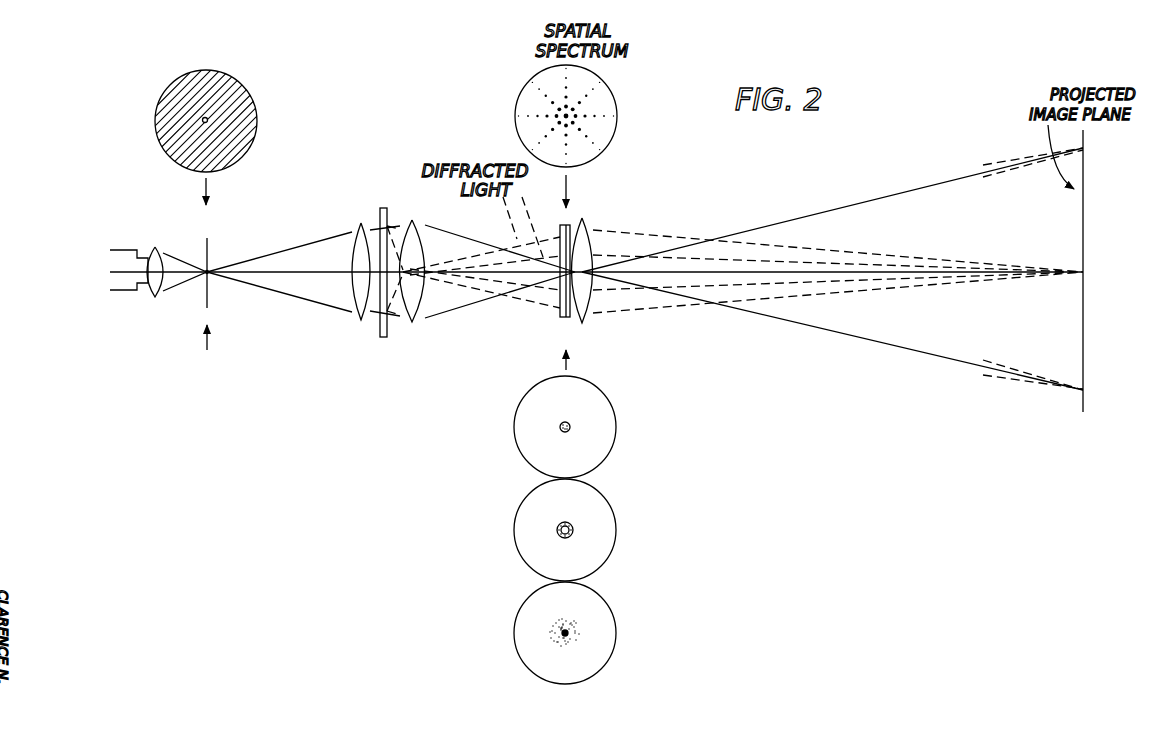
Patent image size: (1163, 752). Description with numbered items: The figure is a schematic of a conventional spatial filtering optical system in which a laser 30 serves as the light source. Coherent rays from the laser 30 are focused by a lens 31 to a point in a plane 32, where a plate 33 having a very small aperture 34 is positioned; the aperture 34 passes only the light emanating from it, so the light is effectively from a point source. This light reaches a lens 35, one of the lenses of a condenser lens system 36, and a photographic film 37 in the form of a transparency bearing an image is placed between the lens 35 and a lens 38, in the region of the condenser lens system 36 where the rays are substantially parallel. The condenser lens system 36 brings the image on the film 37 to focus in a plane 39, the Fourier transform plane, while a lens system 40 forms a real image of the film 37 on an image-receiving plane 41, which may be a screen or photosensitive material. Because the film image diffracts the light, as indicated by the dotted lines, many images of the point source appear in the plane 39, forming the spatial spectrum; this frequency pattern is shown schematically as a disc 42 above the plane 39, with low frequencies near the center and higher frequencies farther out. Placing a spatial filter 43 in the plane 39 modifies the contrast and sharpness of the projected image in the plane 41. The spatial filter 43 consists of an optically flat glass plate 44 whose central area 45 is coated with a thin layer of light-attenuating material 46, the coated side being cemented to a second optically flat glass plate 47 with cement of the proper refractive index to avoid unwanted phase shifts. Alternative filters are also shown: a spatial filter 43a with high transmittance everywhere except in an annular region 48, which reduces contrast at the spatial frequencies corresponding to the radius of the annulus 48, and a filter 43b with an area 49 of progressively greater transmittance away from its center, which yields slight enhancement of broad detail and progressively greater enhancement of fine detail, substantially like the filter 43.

The laser 30 is at (119, 291).
The lens 31 is at (157, 247).
The plane 32 is at (210, 251).
The plate 33 is at (256, 110).
The aperture 34 is at (203, 121).
The lens 35 is at (350, 299).
The condenser lens system 36 is at (409, 327).
The photographic film 37 is at (380, 216).
The lens 38 is at (411, 219).
The plane 39 is at (569, 183).
The lens system 40 is at (588, 313).
The image-receiving plane 41 is at (1089, 199).
The disc 42 is at (605, 101).
The spatial filter 43 is at (557, 320).
The spatial filter 43a is at (613, 502).
The filter 43b is at (611, 600).
The optically flat glass plate 44 is at (571, 227).
The central area 45 is at (570, 425).
The light-attenuating material 46 is at (560, 428).
The second optically flat glass plate 47 is at (560, 229).
The annular region 48 is at (575, 530).
The area 49 is at (578, 633).